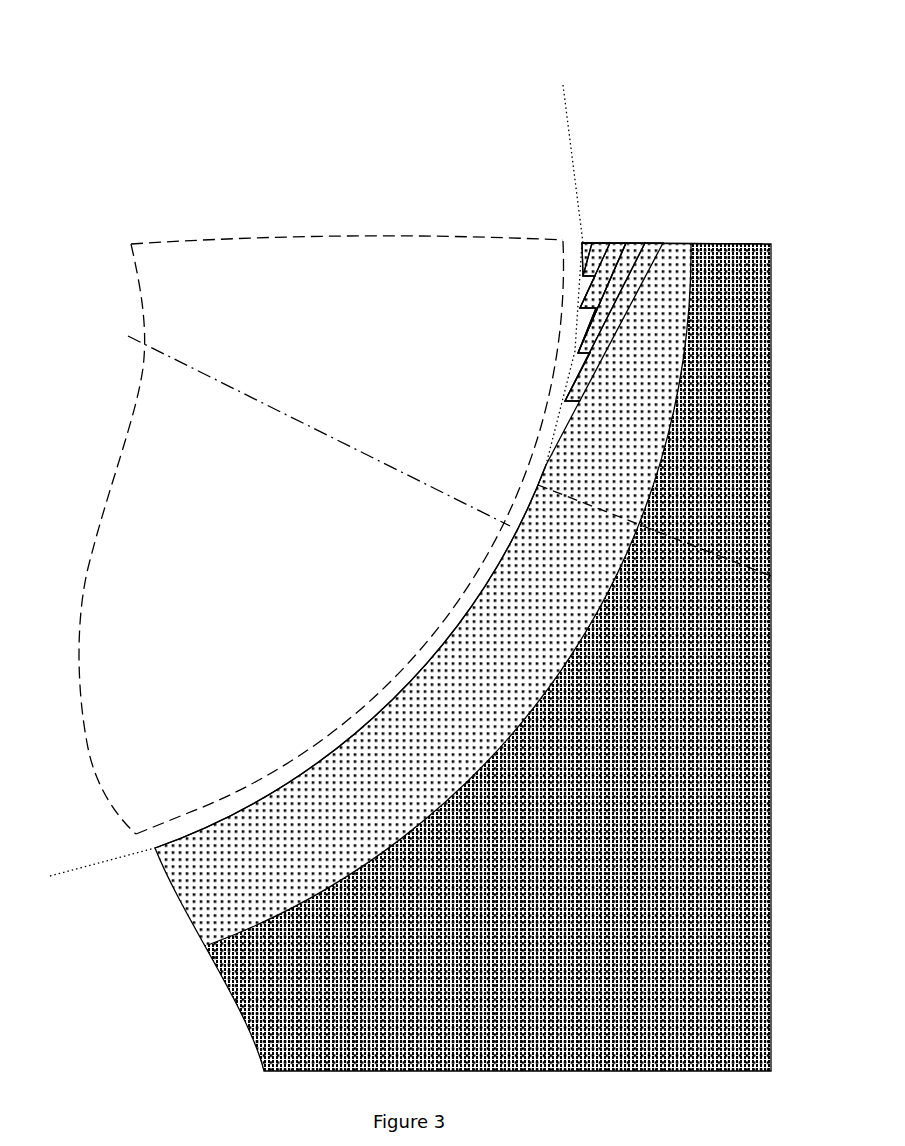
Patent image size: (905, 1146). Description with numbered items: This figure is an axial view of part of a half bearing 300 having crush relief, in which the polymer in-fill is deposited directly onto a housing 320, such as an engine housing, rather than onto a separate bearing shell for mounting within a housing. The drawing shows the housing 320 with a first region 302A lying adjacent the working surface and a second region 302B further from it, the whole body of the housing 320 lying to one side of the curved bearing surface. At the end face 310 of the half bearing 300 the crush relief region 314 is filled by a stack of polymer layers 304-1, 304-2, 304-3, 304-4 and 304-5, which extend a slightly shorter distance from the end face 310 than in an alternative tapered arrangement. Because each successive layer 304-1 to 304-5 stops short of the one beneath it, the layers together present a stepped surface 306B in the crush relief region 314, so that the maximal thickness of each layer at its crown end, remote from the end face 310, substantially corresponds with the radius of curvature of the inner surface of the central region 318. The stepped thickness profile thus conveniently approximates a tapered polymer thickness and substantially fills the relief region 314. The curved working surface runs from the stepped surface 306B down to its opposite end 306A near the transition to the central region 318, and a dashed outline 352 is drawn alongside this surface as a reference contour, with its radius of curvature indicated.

The half bearing 300 is at (120, 128).
The first substrate region 302A is at (658, 262).
The second substrate region 302B is at (750, 262).
The polymer layer 304-1 is at (643, 245).
The polymer layer 304-2 is at (630, 240).
The polymer layer 304-3 is at (609, 250).
The polymer layer 304-4 is at (591, 240).
The polymer layer 304-5 is at (575, 234).
The first end of concave surface 306A is at (293, 765).
The stepped surface 306B is at (568, 322).
The end face 310 is at (712, 235).
The crush relief region 314 is at (618, 307).
The central region 318 is at (180, 830).
The housing 320 is at (683, 822).
The grinding tool 352 is at (321, 535).